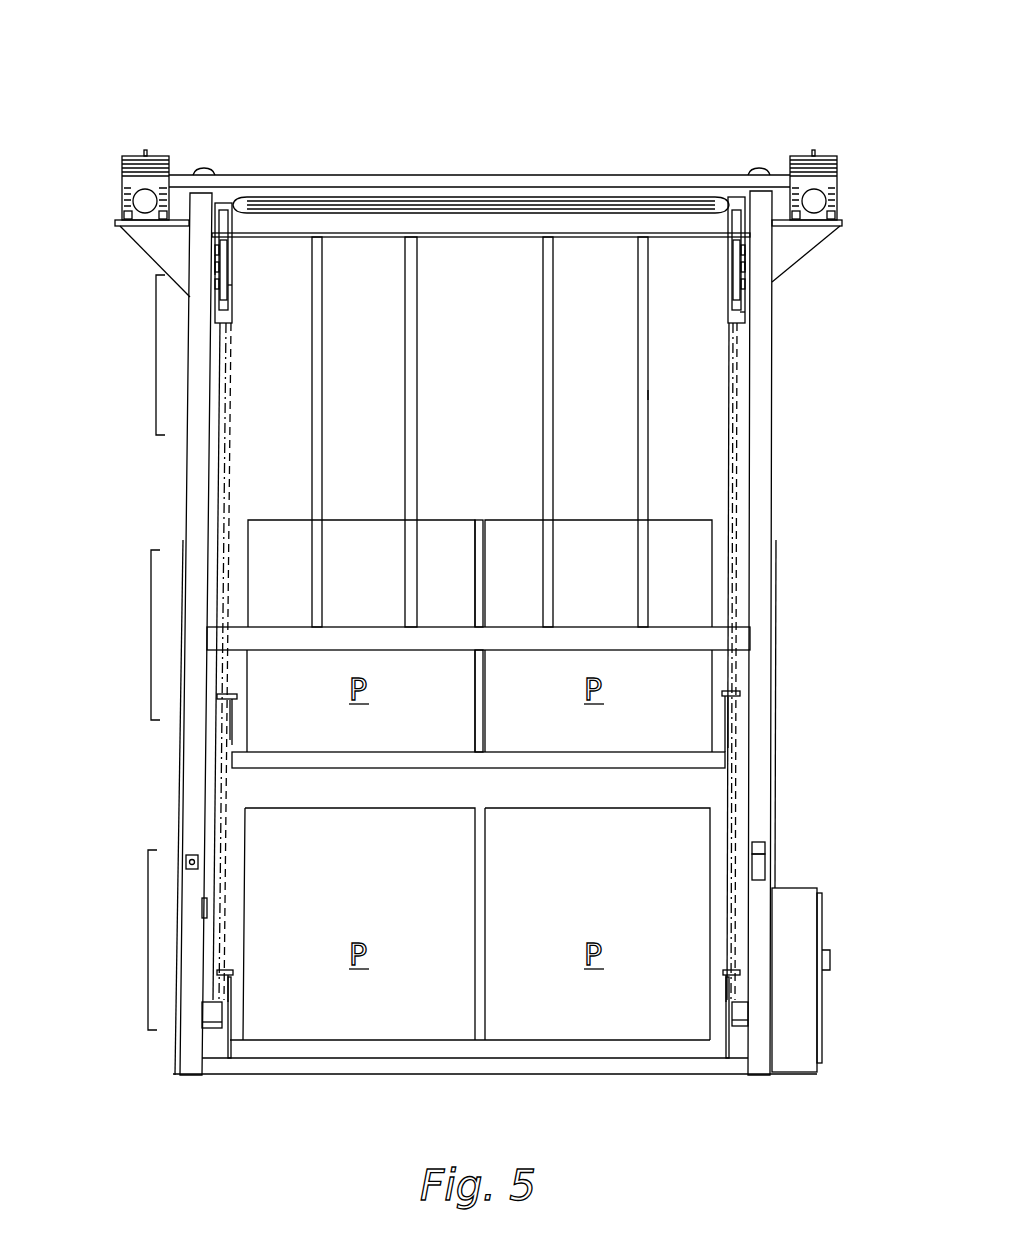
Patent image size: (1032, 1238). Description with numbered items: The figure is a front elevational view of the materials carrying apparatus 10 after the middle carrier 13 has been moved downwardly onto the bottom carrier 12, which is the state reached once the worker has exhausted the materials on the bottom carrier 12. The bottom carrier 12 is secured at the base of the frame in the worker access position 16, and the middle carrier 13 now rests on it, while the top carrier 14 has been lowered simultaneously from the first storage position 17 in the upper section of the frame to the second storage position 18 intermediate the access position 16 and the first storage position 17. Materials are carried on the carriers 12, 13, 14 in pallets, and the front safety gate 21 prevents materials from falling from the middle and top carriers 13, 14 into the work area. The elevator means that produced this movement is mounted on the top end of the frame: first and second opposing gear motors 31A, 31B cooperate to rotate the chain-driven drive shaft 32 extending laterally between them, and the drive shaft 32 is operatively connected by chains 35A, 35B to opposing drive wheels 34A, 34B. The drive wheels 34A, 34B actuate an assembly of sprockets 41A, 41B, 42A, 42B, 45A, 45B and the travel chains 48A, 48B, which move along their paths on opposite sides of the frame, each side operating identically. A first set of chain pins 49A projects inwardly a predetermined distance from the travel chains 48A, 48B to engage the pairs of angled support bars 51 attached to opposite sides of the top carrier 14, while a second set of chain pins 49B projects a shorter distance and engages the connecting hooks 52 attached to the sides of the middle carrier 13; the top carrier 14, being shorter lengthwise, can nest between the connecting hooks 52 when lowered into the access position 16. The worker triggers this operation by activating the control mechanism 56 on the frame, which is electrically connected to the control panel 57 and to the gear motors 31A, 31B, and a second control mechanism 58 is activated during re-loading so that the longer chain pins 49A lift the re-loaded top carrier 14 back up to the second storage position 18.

The materials carrying apparatus 10 is at (82, 80).
The bottom carrier 12 is at (377, 1066).
The middle carrier 13 is at (312, 1048).
The top carrier 14 is at (725, 757).
The worker access position 16 is at (147, 950).
The first storage position 17 is at (148, 356).
The second storage position 18 is at (148, 634).
The front safety gate 21 is at (650, 394).
The first gear motor 31A is at (136, 154).
The second gear motor 31B is at (818, 154).
The drive shaft 32 is at (498, 173).
The drive wheel 34A is at (228, 288).
The drive wheel 34B is at (742, 316).
The chain 35A is at (217, 247).
The chain 35B is at (748, 246).
The sprocket 41A is at (219, 303).
The sprocket 41B is at (738, 274).
The sprocket 42A is at (230, 205).
The sprocket 42B is at (740, 208).
The sprocket 45A is at (219, 1042).
The sprocket 45B is at (735, 1057).
The travel chain 48A is at (222, 432).
The travel chain 48B is at (740, 445).
The first set of chain pins 49A is at (736, 690).
The second set of chain pins 49B is at (224, 967).
The angled support bars 51 is at (733, 736).
The connecting hooks 52 is at (215, 1006).
The control mechanism 56 is at (762, 846).
The control panel 57 is at (795, 988).
The second control mechanism 58 is at (758, 864).